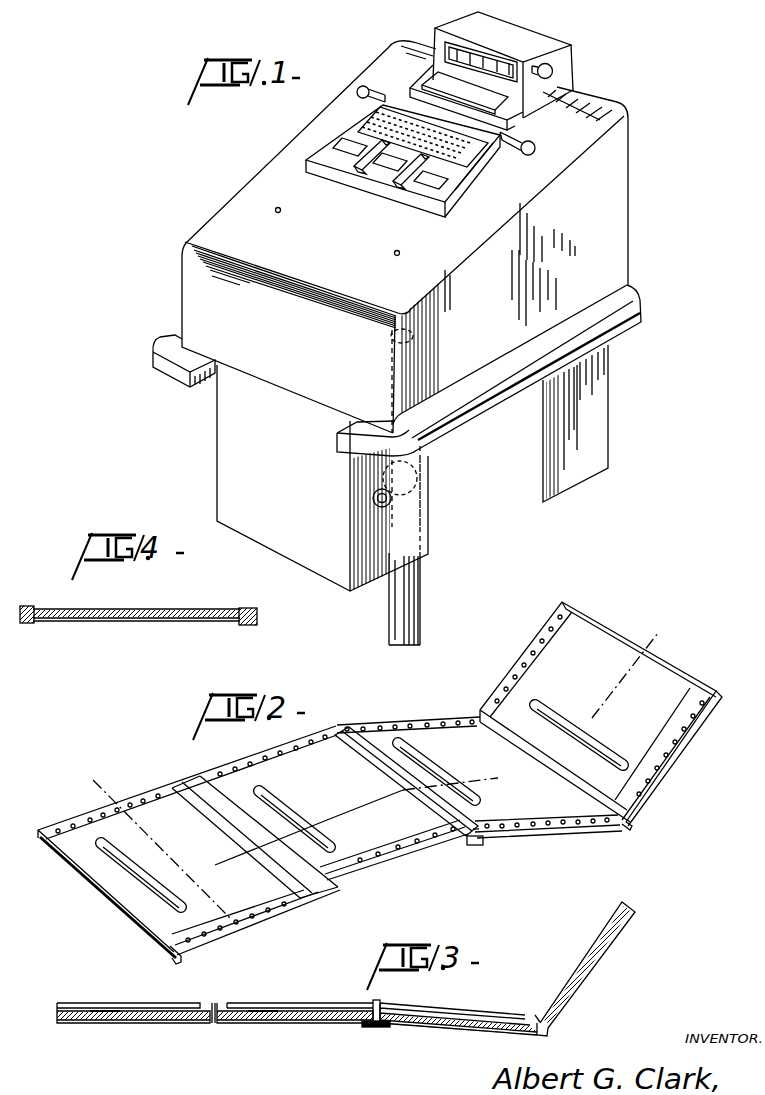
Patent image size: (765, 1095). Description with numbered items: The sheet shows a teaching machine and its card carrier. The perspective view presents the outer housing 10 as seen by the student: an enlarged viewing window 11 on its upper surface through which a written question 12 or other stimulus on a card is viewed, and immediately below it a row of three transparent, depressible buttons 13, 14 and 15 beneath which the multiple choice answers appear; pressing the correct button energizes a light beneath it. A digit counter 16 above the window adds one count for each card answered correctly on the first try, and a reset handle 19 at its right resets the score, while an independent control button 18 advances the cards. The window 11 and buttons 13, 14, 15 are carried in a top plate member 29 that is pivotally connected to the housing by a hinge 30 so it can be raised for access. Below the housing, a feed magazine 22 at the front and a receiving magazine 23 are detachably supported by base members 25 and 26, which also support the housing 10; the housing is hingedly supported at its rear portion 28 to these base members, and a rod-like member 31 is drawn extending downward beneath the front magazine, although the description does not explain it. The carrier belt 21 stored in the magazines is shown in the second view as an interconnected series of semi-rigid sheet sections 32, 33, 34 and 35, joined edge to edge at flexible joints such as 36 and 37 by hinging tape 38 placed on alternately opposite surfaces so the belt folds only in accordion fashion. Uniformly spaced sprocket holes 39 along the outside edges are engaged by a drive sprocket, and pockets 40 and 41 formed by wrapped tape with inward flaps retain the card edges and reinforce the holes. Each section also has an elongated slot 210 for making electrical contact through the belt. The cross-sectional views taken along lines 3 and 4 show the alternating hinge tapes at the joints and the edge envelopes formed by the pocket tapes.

In FIG. 1, the outer housing 10 is at (620, 202).
In FIG. 1, the viewing window 11 is at (483, 153).
In FIG. 1, the written question 12 is at (377, 118).
In FIG. 1, the depressible button 13 is at (345, 147).
In FIG. 1, the depressible button 14 is at (383, 165).
In FIG. 1, the depressible button 15 is at (423, 185).
In FIG. 1, the digit counter 16 is at (480, 62).
In FIG. 1, the control button 18 is at (442, 80).
In FIG. 1, the reset handle 19 is at (552, 68).
In FIG. 4, the carrier belt 21 is at (151, 605).
In FIG. 2, the carrier belt 21 is at (674, 782).
In FIG. 1, the feed magazine 22 is at (245, 441).
In FIG. 1, the receiving magazine 23 is at (596, 380).
In FIG. 1, the base member 25 is at (152, 362).
In FIG. 1, the base member 26 is at (447, 428).
In FIG. 1, the rear portion 28 is at (641, 296).
In FIG. 3, the rear portion 28 is at (238, 1036).
In FIG. 1, the top plate member 29 is at (463, 178).
In FIG. 1, the hinge 30 is at (534, 153).
In FIG. 1, the rod 31 is at (410, 595).
In FIG. 2, the sheet section 32 is at (663, 683).
In FIG. 3, the sheet section 32 is at (613, 943).
In FIG. 2, the sheet section 33 is at (563, 826).
In FIG. 3, the sheet section 33 is at (480, 1023).
In FIG. 2, the sheet section 34 is at (400, 835).
In FIG. 3, the sheet section 34 is at (310, 1021).
In FIG. 4, the sheet section 35 is at (106, 620).
In FIG. 2, the sheet section 35 is at (270, 888).
In FIG. 3, the sheet section 35 is at (148, 1021).
In FIG. 2, the flexible edge joint 36 is at (630, 826).
In FIG. 3, the flexible edge joint 36 is at (540, 1031).
In FIG. 2, the flexible edge joint 37 is at (363, 737).
In FIG. 3, the flexible edge joint 37 is at (380, 1003).
In FIG. 2, the hinging tape 38 is at (487, 668).
In FIG. 3, the hinging tape 38 is at (212, 1013).
In FIG. 2, the sprocket holes 39 is at (233, 765).
In FIG. 4, the pocket 40 is at (240, 607).
In FIG. 2, the pocket 40 is at (167, 945).
In FIG. 4, the pocket 41 is at (31, 608).
In FIG. 2, the pocket 41 is at (147, 808).
In FIG. 3, the pocket 41 is at (107, 985).
In FIG. 2, the elongated slot 210 is at (222, 826).
In FIG. 3, the elongated slot 210 is at (102, 1020).
In FIG. 2, the section line 3— 3 is at (115, 914).
In FIG. 2, the section line 4— 4 is at (106, 790).